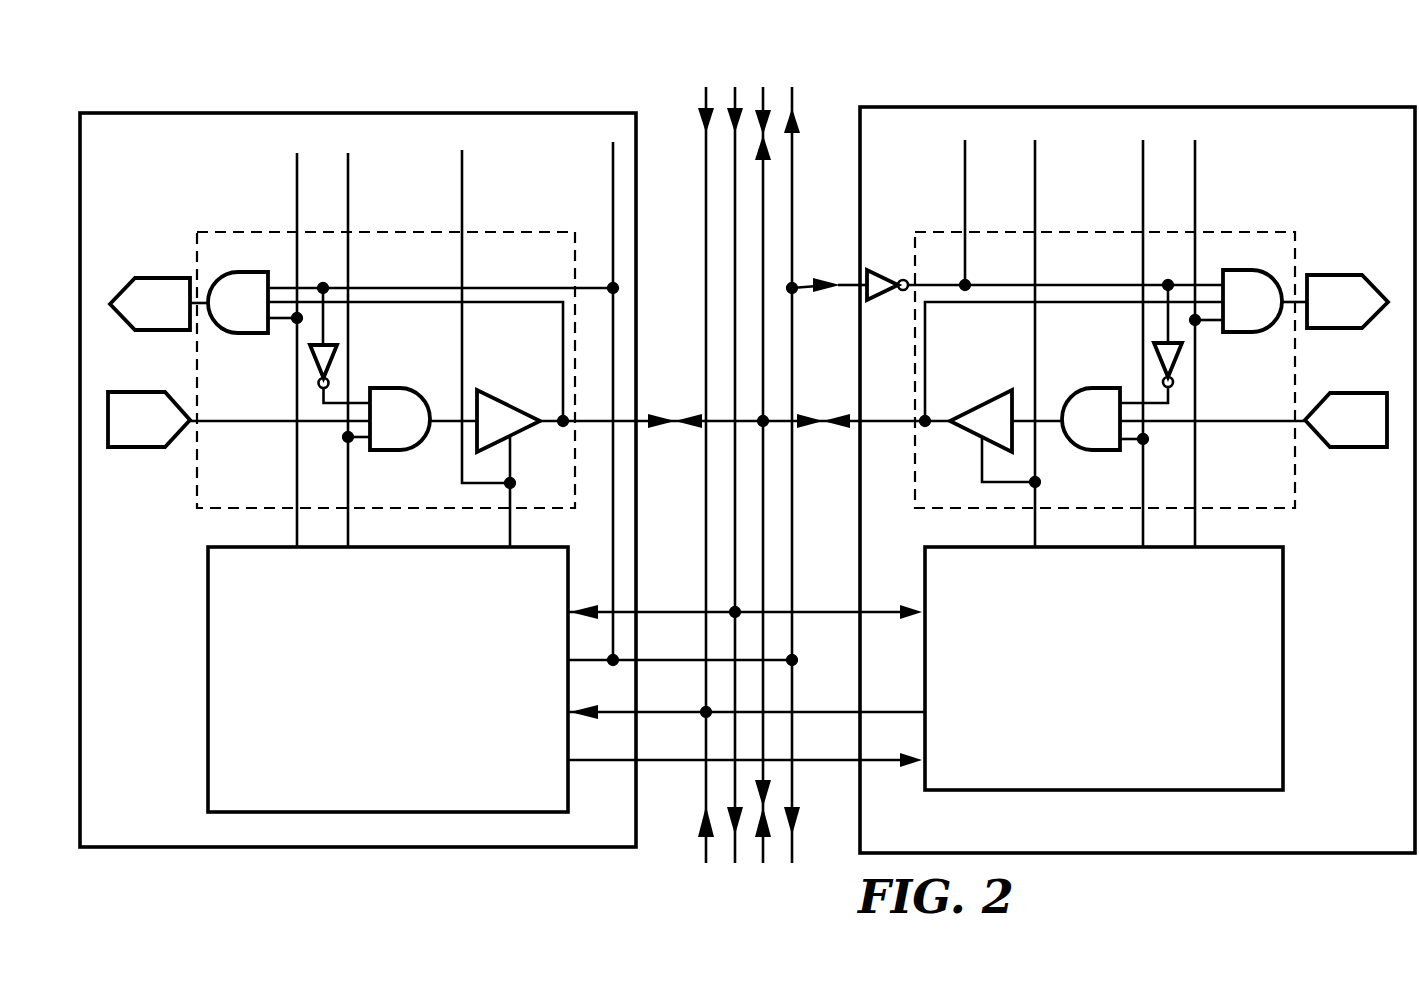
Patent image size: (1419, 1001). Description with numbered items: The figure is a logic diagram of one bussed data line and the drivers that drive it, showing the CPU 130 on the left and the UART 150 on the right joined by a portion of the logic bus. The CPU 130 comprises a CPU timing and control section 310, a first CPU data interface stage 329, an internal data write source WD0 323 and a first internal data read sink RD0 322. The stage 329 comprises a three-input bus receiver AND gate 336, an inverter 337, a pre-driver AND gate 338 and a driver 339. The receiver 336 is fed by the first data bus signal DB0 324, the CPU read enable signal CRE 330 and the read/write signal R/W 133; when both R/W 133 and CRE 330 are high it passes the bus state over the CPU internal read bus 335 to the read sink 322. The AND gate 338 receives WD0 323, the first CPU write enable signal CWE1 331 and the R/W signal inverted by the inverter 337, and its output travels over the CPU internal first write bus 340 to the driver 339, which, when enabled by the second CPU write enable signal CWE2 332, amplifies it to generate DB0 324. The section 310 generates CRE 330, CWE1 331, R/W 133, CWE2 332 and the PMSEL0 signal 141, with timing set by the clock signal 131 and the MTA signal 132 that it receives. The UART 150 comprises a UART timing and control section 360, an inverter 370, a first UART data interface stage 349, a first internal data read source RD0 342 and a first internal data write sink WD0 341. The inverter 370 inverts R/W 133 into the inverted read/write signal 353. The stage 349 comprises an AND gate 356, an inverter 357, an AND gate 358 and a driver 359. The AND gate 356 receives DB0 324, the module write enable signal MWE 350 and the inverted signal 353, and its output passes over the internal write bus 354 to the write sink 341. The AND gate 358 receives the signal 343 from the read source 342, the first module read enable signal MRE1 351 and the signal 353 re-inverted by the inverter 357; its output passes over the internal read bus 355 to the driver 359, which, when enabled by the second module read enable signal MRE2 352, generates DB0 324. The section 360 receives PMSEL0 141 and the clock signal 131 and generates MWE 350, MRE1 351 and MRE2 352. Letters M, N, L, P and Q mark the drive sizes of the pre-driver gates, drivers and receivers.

The CPU 130 is at (257, 112).
The UART 150 is at (1146, 106).
The CPU timing and control section 310 is at (208, 607).
The UART timing and control section 360 is at (1283, 608).
The PMSEL0 signal 141 is at (883, 765).
The clock signal 131 is at (735, 87).
The MTA signal 132 is at (706, 87).
The read/write (R/W) signal 133 is at (792, 87).
The first data bus signal (DB0) 324 is at (763, 87).
The first CPU data interface stage 329 is at (542, 232).
The first UART data interface stage 349 is at (1265, 230).
The CPU read enable (CRE) signal 330 is at (297, 153).
The first CPU write enable (CWE1) signal 331 is at (348, 153).
The second CPU write enable (CWE2) signal 332 is at (465, 178).
The first internal data read sink (RD0) 322 is at (150, 278).
The internal data write source (WD0) 323 is at (150, 392).
The CPU internal read bus 335 is at (209, 310).
The AND gate (bus receiver) 336 is at (228, 272).
The inverter 337 is at (330, 340).
The AND gate (pre-driver) 338 is at (412, 452).
The driver 339 is at (483, 390).
The CPU internal first write bus 340 is at (452, 420).
The first internal data write sink (WD0) 341 is at (1340, 275).
The first internal data read source (RD0) 342 is at (1335, 393).
The signal from first internal data read source 343 is at (1230, 420).
The module write enable (MWE) signal 350 is at (1195, 150).
The first module read enable (MRE1) signal 351 is at (1143, 150).
The second module read enable (MRE2) signal 352 is at (1035, 150).
The inverted read/write signal 353 is at (965, 150).
The internal write bus 354 is at (1287, 300).
The internal read bus 355 is at (1050, 428).
The AND gate (bus receiver) 356 is at (1262, 333).
The inverter 357 is at (1180, 350).
The AND gate (pre-driver) 358 is at (1115, 385).
The driver 359 is at (1000, 388).
The inverter 370 is at (875, 268).